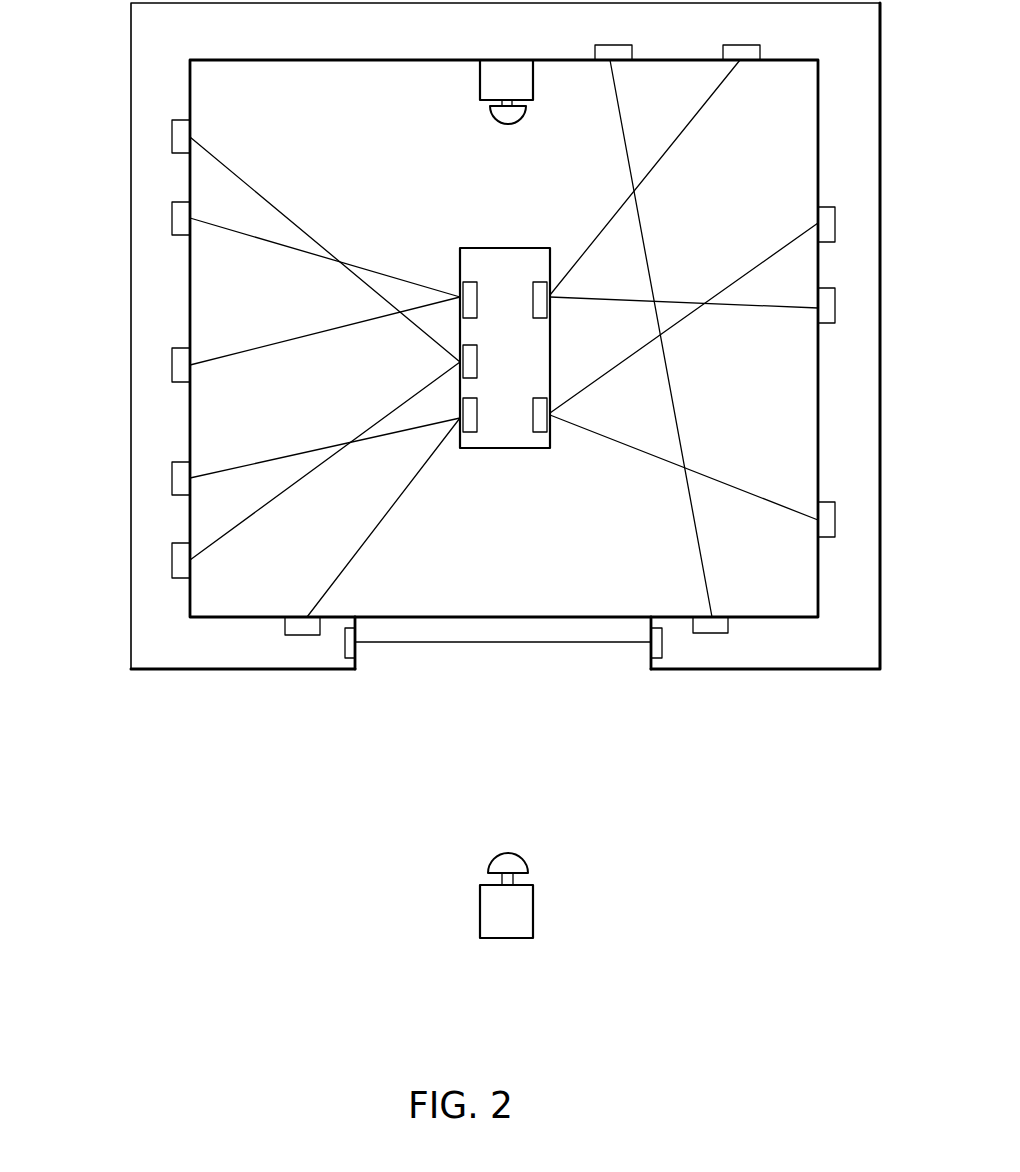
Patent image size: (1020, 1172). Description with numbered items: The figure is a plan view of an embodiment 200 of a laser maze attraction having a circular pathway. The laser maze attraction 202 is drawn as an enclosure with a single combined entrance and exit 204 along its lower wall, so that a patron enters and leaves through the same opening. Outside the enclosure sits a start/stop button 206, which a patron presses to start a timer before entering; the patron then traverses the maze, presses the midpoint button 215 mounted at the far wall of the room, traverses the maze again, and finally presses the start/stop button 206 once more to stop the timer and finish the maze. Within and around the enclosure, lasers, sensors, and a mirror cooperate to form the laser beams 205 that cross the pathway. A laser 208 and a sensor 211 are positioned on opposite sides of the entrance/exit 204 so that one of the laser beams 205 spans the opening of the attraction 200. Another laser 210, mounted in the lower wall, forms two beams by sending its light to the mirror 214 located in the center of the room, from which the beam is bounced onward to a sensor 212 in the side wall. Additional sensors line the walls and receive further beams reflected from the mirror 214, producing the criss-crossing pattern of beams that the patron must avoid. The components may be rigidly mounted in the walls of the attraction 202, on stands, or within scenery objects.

The embodiment showing a laser maze attraction with a circular pathway 200 is at (213, 853).
The laser maze attraction 202 is at (777, 669).
The combined entrance and exit 204 is at (553, 657).
The laser beams 205 is at (320, 466).
The start/stop button 206 is at (490, 865).
The laser 208 is at (345, 649).
The laser 210 is at (300, 635).
The sensor 211 is at (662, 650).
The sensor 212 is at (172, 488).
The mirror 214 is at (480, 413).
The midpoint button 215 is at (490, 122).